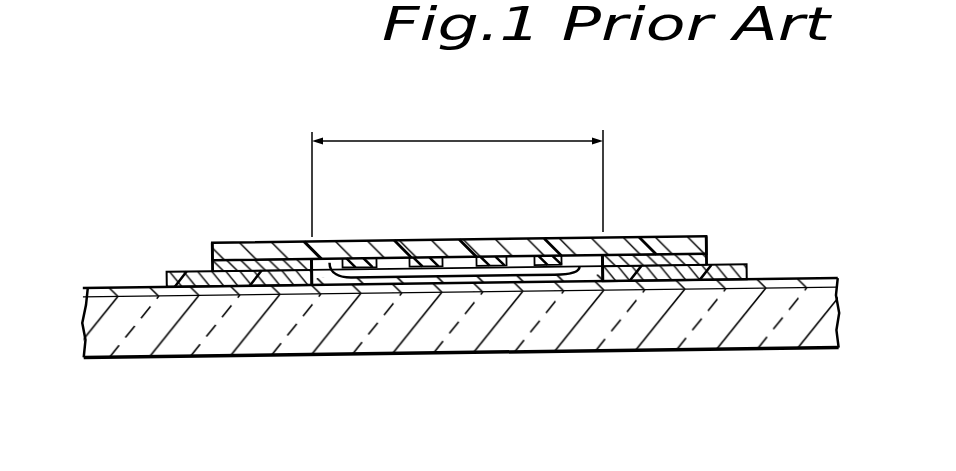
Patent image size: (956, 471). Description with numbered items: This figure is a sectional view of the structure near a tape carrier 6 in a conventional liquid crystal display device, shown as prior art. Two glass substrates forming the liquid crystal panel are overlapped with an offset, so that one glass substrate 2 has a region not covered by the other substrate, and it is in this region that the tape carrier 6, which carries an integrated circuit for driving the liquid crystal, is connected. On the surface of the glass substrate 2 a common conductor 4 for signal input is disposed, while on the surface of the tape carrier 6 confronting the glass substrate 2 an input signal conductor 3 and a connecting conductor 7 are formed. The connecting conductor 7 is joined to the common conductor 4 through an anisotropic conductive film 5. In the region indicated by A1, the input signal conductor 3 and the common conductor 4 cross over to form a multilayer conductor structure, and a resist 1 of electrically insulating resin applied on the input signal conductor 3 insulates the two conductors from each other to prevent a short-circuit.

The resist 1 is at (526, 268).
The glass substrate 2 is at (752, 327).
The input signal conductor 3 is at (488, 257).
The common conductor for signal input 4 is at (813, 278).
The anisotropic conductive film 5 is at (180, 268).
The tape carrier 6 is at (503, 268).
The connecting conductor 7 is at (232, 258).
The multilayer conductor structure region A1 is at (462, 138).